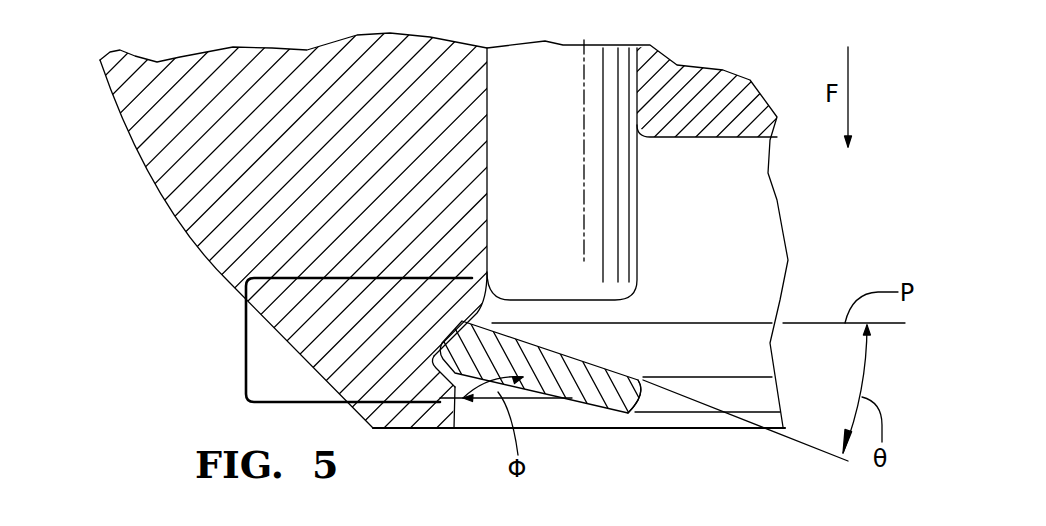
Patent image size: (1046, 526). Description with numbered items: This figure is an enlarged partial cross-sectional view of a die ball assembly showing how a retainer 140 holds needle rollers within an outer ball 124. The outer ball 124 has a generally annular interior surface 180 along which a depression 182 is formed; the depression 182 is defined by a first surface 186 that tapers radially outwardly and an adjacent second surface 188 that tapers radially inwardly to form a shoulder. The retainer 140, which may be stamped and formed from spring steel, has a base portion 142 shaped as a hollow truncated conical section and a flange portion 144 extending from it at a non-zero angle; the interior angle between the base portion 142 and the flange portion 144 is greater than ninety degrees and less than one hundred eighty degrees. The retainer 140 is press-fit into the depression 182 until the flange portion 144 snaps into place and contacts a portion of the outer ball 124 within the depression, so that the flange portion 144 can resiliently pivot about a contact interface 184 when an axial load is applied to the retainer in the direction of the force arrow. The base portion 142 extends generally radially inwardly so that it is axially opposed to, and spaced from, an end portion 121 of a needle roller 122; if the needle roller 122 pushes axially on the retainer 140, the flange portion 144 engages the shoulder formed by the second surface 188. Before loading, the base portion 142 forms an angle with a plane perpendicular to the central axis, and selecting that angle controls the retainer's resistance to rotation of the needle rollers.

The end portion 121 is at (615, 260).
The needle roller 122 is at (638, 97).
The outer ball 124 is at (140, 133).
The retainer 140 is at (574, 396).
The base portion 142 is at (634, 400).
The flange portion 144 is at (452, 392).
The interior surface 180 is at (487, 157).
The depression 182 is at (246, 278).
The contact interface 184 is at (450, 348).
The first surface 186 is at (470, 313).
The second surface 188 is at (447, 385).